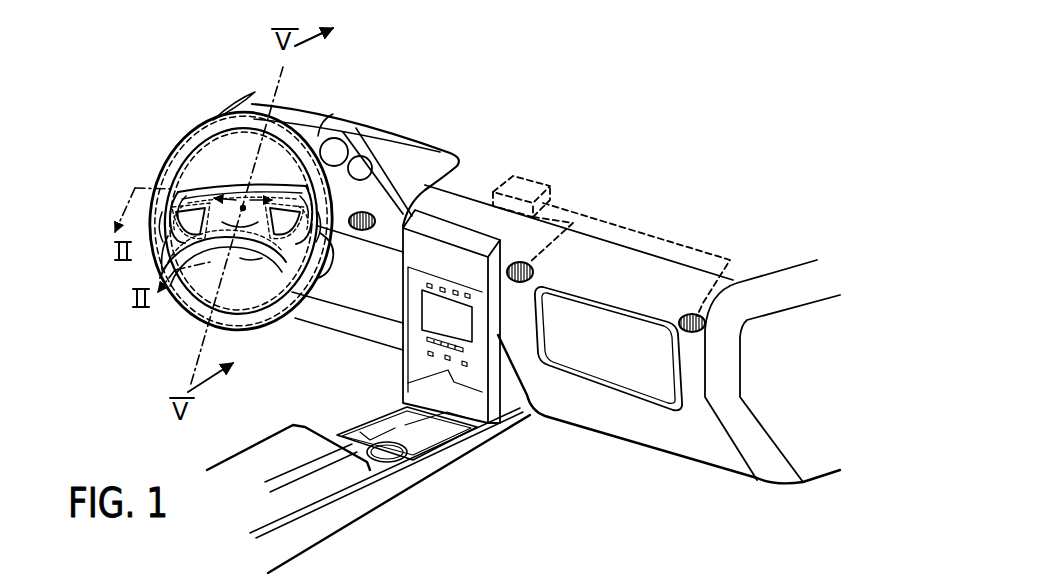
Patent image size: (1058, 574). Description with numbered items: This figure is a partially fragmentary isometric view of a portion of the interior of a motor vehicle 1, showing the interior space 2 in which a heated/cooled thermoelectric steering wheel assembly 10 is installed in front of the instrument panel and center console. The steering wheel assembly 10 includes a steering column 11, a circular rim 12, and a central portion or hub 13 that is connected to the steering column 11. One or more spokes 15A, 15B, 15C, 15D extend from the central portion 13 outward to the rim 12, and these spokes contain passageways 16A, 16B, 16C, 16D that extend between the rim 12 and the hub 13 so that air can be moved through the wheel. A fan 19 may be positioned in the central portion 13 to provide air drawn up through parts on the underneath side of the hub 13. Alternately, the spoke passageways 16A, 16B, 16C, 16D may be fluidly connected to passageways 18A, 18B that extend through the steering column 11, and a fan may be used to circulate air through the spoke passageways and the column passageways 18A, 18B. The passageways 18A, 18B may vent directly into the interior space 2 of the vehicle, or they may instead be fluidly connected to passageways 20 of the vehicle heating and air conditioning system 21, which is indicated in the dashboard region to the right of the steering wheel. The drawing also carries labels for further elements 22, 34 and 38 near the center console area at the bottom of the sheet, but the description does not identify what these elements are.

The motor vehicle 1 is at (686, 231).
The interior space 2 is at (575, 475).
The steering wheel assembly 10 is at (184, 134).
The steering column 11 is at (328, 262).
The circular rim 12 is at (175, 150).
The central portion or hub 13 is at (215, 245).
The spoke 15A is at (167, 307).
The spoke 15B is at (243, 237).
The spoke 15C is at (318, 172).
The spoke 15D is at (200, 186).
The passageway 16A is at (197, 235).
The passageway 16B is at (280, 245).
The passageway 16C is at (305, 186).
The passageway 16D is at (200, 186).
The passageway 18A is at (243, 215).
The passageway 18B is at (268, 152).
The fan 19 is at (345, 128).
The passageways of vehicle heating and air conditioning system 20 is at (565, 205).
The vehicle heating and air conditioning system 21 is at (640, 233).
The console storage 22 is at (407, 490).
The cup holder 34 is at (507, 501).
The center stack display 38 is at (488, 392).